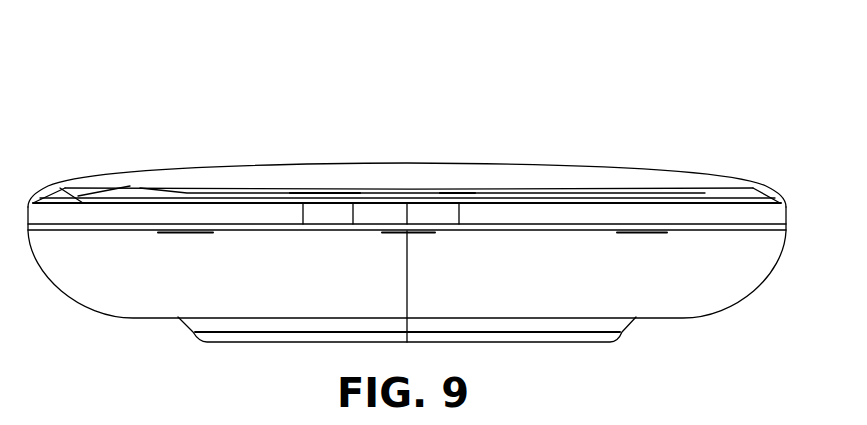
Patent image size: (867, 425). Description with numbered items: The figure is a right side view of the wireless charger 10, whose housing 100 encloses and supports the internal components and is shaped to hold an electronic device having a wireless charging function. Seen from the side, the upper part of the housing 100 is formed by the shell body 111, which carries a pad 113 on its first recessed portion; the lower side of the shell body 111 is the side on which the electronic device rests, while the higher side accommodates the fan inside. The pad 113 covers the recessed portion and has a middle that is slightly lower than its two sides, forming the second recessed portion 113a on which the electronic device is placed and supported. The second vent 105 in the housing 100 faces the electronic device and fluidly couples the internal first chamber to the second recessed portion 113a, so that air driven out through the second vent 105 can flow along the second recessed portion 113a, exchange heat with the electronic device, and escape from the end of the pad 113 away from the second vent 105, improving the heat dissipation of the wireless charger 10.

The wireless charger 10 is at (119, 117).
The housing 100 is at (407, 167).
The second vent 105 is at (550, 190).
The shell body 111 is at (217, 217).
The pad 113 is at (710, 193).
The second recessed portion 113a is at (433, 197).